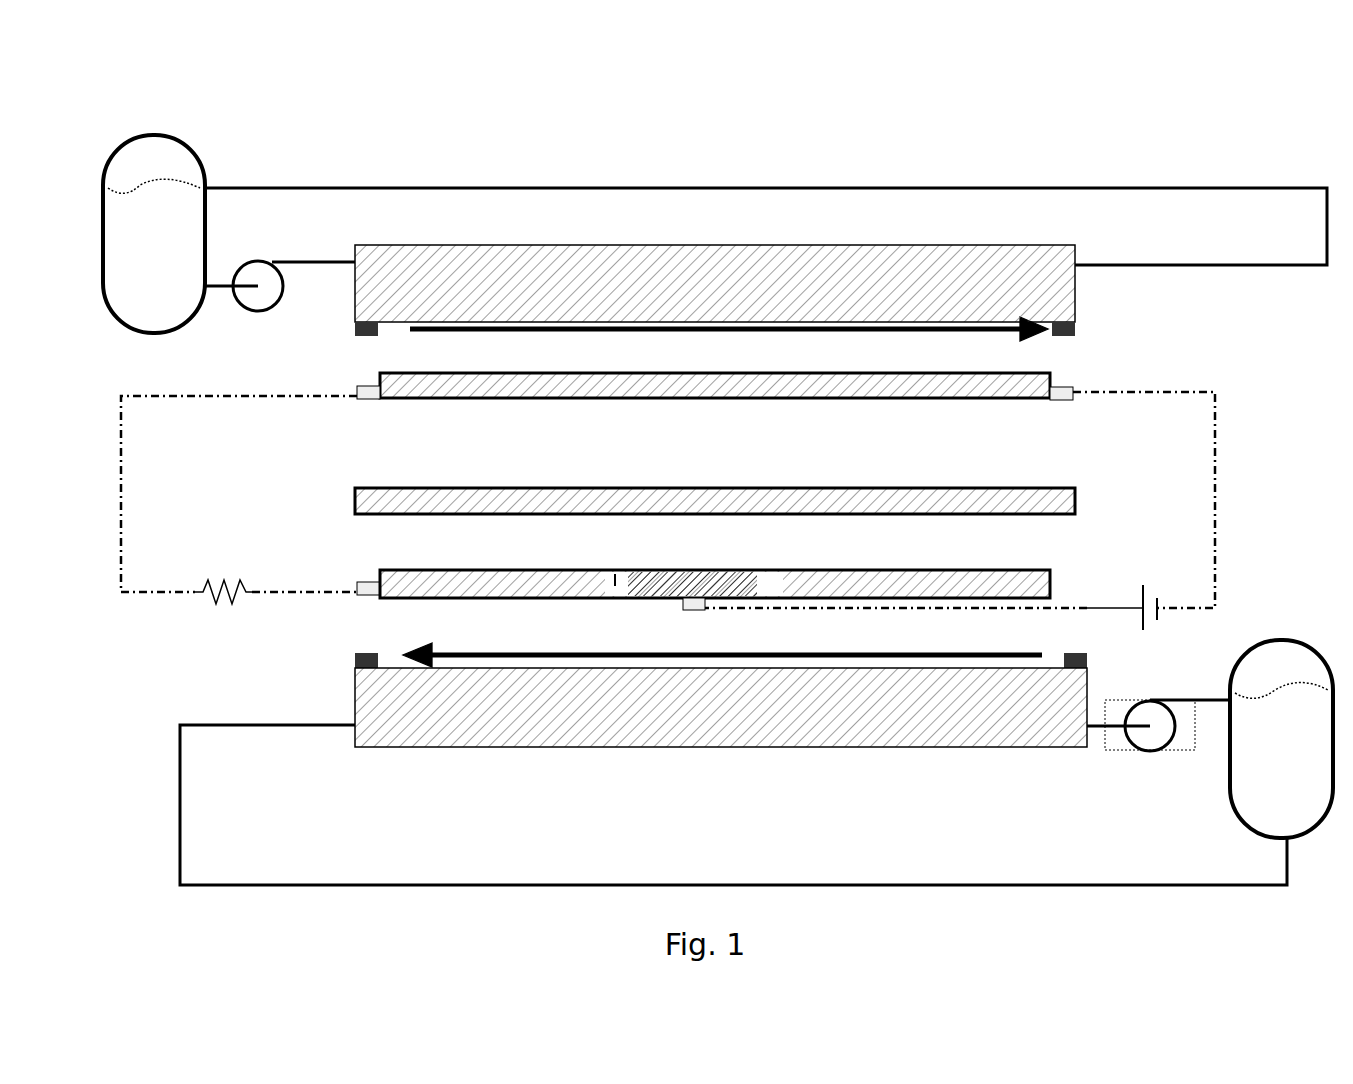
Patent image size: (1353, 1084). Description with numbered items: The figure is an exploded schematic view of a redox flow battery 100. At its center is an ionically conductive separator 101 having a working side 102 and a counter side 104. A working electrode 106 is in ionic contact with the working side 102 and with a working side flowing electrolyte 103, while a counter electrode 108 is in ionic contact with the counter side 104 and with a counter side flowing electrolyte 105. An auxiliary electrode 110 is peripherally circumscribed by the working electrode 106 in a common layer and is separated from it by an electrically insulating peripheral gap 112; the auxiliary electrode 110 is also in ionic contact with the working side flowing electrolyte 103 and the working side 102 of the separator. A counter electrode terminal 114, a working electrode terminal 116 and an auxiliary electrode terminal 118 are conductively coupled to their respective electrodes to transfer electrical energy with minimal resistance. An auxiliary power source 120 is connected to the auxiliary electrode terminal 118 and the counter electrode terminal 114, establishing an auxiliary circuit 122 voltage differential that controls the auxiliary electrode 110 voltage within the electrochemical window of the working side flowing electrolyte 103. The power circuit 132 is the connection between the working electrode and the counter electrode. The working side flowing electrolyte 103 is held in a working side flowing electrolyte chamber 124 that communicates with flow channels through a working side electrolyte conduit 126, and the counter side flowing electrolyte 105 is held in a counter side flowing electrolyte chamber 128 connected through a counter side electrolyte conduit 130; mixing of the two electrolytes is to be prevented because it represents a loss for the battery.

The redox flow battery 100 is at (198, 55).
The ionically conductive separator 101 is at (355, 500).
The working side 102 is at (520, 515).
The working side flowing electrolyte 103 is at (612, 652).
The counter side 104 is at (720, 487).
The counter side flowing electrolyte 105 is at (150, 295).
The working electrode 106 is at (510, 600).
The counter electrode 108 is at (715, 399).
The auxiliary electrode 110 is at (730, 572).
The electrically insulating peripheral gap 112 is at (615, 574).
The counter electrode terminal 114 is at (350, 400).
The working electrode terminal 116 is at (1062, 386).
The auxiliary electrode terminal 118 is at (683, 606).
The auxiliary power source 120 is at (1143, 590).
The auxiliary circuit 122 is at (1207, 392).
The working side flowing electrolyte chamber 124 is at (1228, 780).
The working side electrolyte conduit 126 is at (1005, 885).
The counter side flowing electrolyte chamber 128 is at (142, 133).
The counter side electrolyte conduit 130 is at (510, 184).
The power circuit 132 is at (300, 400).